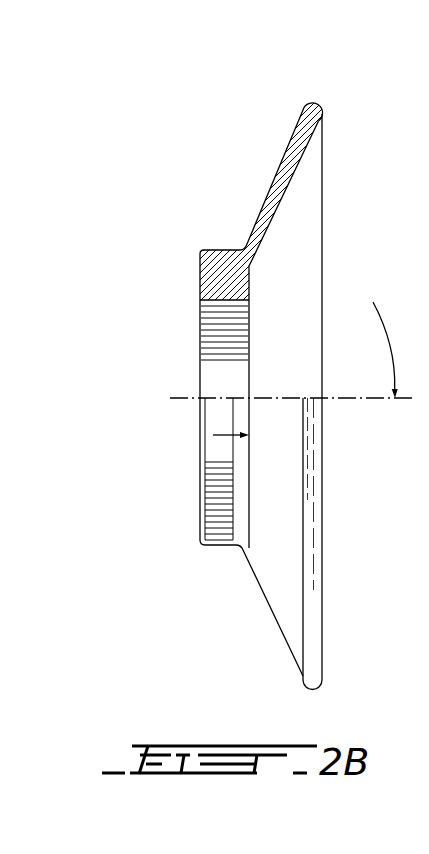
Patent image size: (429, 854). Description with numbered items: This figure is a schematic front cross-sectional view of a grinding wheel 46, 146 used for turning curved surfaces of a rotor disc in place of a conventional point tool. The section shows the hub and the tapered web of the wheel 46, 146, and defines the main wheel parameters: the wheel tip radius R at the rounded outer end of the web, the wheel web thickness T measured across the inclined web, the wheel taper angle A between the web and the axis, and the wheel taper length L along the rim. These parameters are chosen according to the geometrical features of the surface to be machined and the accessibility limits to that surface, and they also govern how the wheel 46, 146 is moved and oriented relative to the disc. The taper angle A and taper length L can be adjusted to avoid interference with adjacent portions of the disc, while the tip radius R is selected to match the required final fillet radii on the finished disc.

The grinding wheel 46 is at (247, 380).
The grinding wheel 146 is at (192, 220).
The wheel tip radius R is at (296, 99).
The wheel web thickness T is at (252, 148).
The wheel taper angle A is at (287, 218).
The wheel taper length L is at (331, 435).